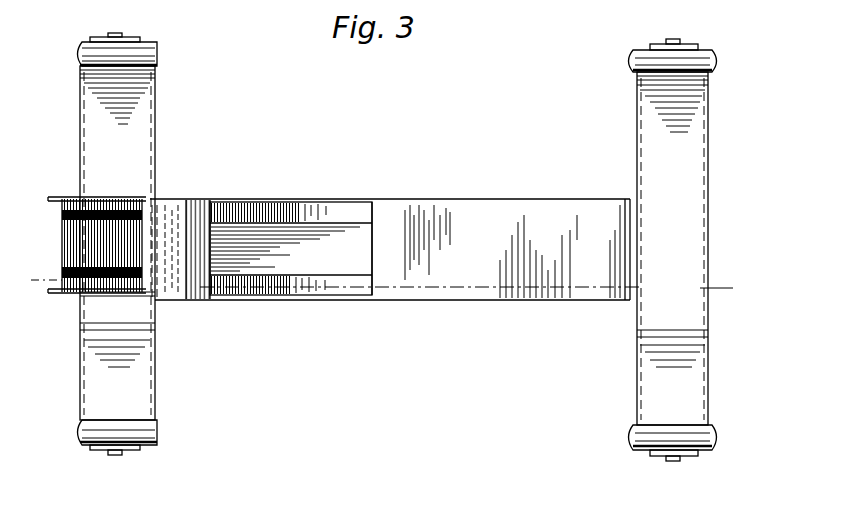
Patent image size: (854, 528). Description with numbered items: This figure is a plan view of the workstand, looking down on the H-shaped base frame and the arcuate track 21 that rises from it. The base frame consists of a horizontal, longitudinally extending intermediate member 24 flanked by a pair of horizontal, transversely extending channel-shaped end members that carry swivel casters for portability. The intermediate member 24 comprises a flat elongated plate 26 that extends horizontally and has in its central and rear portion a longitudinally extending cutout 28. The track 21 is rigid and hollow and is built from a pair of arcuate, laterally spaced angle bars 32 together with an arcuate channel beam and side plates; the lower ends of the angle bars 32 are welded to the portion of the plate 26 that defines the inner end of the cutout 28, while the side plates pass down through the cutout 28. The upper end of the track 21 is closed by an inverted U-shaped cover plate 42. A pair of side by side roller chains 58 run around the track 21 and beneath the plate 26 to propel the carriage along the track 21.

The arcuate track 21 is at (124, 225).
The intermediate member 24 is at (490, 190).
The flat elongated plate 26 is at (502, 278).
The cutout 28 is at (372, 262).
The angle bars 32 is at (318, 204).
The cover plate 42 is at (185, 225).
The roller chains 58 is at (95, 199).